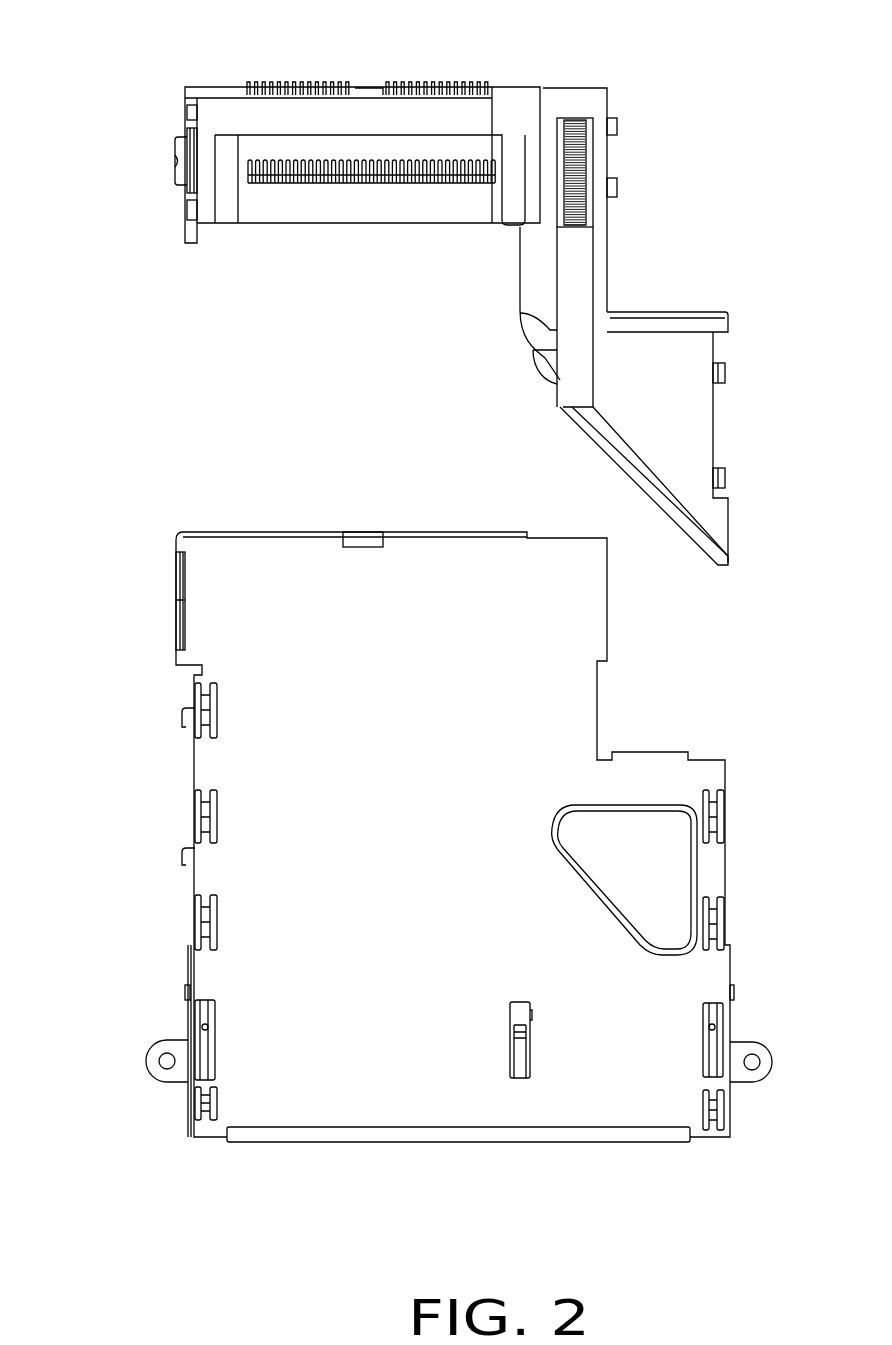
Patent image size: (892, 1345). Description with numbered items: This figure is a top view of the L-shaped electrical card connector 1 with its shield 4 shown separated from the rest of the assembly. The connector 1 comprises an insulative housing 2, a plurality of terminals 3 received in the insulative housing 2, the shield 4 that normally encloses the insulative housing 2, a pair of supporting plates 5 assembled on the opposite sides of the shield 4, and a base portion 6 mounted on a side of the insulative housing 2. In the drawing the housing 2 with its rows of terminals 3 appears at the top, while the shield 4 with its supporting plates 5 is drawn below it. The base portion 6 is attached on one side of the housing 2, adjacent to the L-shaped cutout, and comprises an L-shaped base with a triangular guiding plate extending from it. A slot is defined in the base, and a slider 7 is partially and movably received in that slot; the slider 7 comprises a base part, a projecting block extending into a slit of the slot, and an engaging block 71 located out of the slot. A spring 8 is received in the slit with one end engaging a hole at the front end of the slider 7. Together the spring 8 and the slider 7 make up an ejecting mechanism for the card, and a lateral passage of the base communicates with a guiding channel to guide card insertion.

The electrical card connector 1 is at (151, 142).
The insulative housing 2 is at (240, 118).
The terminals 3 is at (490, 82).
The shield 4 is at (240, 878).
The supporting plate 5 is at (738, 1053).
The base portion 6 is at (683, 405).
The slider 7 is at (576, 375).
The engaging block 71 is at (538, 370).
The spring 8 is at (583, 185).